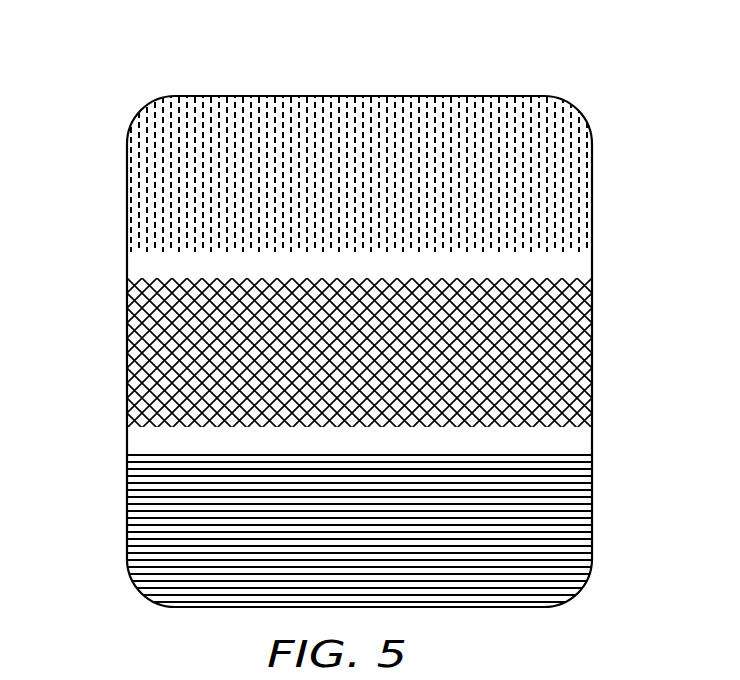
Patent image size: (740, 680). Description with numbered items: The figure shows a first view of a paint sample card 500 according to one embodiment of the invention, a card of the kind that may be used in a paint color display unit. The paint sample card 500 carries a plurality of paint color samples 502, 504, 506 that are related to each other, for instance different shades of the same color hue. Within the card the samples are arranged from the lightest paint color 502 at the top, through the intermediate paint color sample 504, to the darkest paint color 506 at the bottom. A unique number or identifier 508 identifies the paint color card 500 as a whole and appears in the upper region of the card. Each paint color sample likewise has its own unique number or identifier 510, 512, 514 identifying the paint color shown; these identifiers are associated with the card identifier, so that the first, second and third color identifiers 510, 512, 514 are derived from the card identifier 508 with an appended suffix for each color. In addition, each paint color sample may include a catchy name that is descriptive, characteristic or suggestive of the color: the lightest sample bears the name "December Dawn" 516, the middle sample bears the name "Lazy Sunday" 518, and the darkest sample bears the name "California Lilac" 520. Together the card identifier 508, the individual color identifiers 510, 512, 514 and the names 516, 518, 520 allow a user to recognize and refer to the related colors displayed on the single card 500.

The paint sample card 500 is at (275, 80).
The paint color sample 502 is at (568, 217).
The paint color sample 504 is at (578, 393).
The paint color sample 506 is at (580, 537).
The unique number or identifier 508 is at (566, 133).
The unique number or identifier 510 is at (215, 231).
The unique number or identifier 512 is at (215, 405).
The unique number or identifier 514 is at (210, 578).
The catchy name 516 is at (163, 203).
The catchy name 518 is at (180, 377).
The catchy name 520 is at (160, 545).